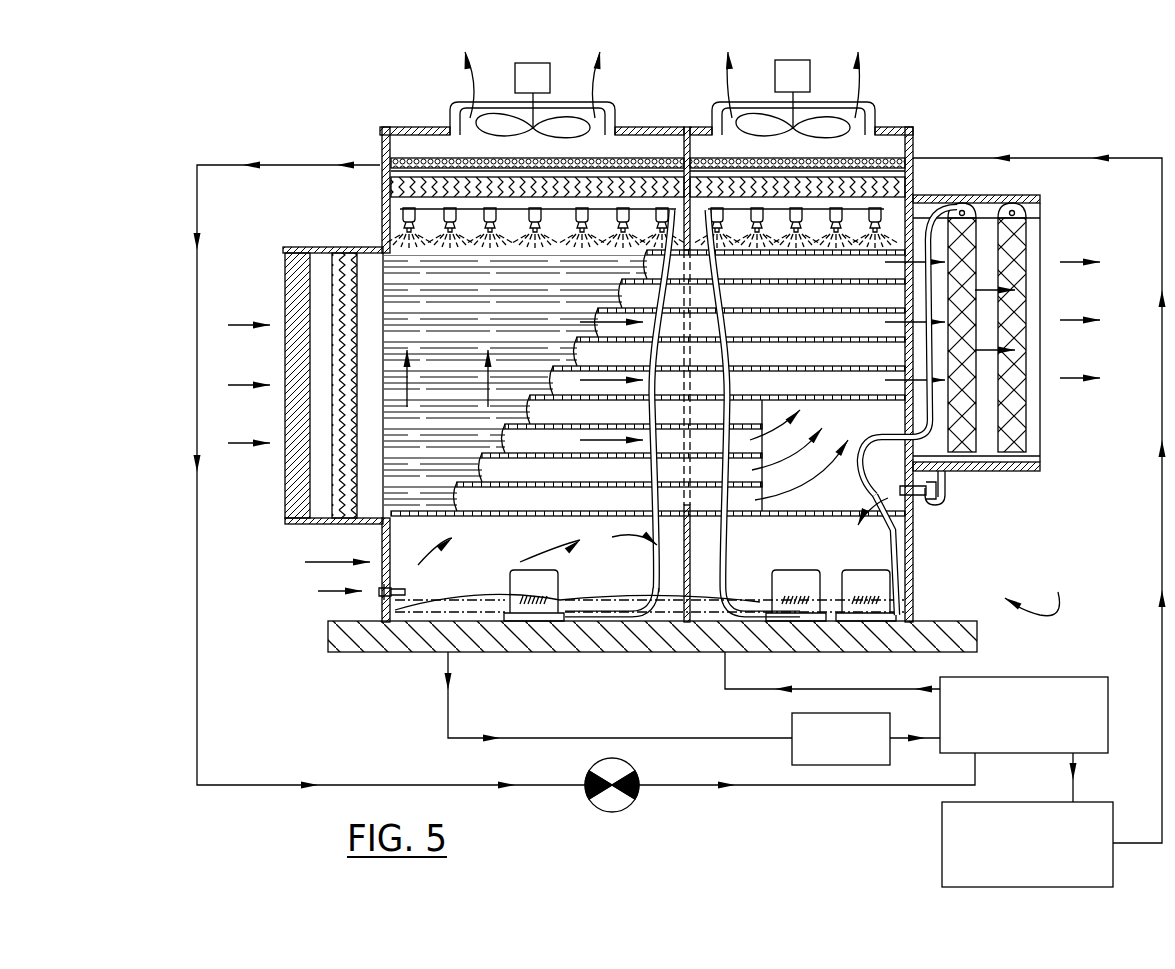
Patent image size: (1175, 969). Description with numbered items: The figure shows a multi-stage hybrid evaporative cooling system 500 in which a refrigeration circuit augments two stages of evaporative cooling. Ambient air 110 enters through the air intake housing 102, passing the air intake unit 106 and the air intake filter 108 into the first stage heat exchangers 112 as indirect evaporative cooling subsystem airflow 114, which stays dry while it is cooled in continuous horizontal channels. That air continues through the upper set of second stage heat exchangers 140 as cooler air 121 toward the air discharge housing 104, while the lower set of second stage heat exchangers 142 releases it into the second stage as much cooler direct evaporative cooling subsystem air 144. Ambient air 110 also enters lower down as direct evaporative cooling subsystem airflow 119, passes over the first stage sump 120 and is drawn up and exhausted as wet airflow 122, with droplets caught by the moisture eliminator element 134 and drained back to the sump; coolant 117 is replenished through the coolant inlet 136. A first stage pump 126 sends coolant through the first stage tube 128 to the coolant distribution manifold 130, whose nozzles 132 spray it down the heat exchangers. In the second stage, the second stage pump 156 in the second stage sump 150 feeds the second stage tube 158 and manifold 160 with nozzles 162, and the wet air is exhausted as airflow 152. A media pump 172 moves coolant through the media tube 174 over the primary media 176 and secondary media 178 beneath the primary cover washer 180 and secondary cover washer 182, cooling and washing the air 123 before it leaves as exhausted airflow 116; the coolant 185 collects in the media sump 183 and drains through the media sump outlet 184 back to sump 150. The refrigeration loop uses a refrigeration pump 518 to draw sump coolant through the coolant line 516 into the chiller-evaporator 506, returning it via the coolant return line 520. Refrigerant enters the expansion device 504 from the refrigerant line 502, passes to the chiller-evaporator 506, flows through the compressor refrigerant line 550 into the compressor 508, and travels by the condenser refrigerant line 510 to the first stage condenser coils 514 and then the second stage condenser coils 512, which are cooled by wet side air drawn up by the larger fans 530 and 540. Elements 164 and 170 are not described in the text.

The air intake housing 102 is at (318, 235).
The air discharge housing 104 is at (1050, 222).
The air intake unit 106 is at (285, 482).
The air intake filter 108 is at (344, 500).
The ambient air 110 is at (310, 562).
The first stage heat exchangers 112 is at (455, 322).
The indirect evaporative cooling subsystem airflow 114 is at (615, 437).
The exhausted airflow 116 is at (1060, 378).
The coolant 117 is at (312, 592).
The direct evaporative cooling subsystem airflow 119 is at (538, 541).
The first stage sump 120 is at (450, 598).
The cooler air 121 is at (900, 380).
The exhausted wet airflow 122 is at (535, 84).
The air entering discharge housing 123 is at (994, 350).
The first stage pump 126 is at (552, 582).
The first stage tube 128 is at (665, 580).
The first stage coolant distribution manifold 130 is at (424, 209).
The nozzles 132 is at (406, 215).
The first stage moisture eliminator element 134 is at (398, 185).
The coolant inlet 136 is at (402, 592).
The upper set of second stage heat exchangers 140 is at (768, 290).
The lower set of second stage heat exchangers 142 is at (745, 505).
The second stage direct evaporative cooling subsystem air 144 is at (800, 455).
The second stage sump 150 is at (715, 600).
The second stage exhausted airflow 152 is at (794, 84).
The second stage pump 156 is at (790, 575).
The second stage tube 158 is at (728, 580).
The second stage coolant distribution manifold 160 is at (818, 205).
The nozzles 162 is at (912, 135).
The spray nozzle 164 is at (875, 212).
The base 170 is at (345, 655).
The media pump 172 is at (840, 572).
The media tube 174 is at (870, 445).
The primary media 176 is at (965, 425).
The secondary media 178 is at (1020, 420).
The primary cover washer 180 is at (961, 209).
The secondary cover washer 182 is at (1013, 209).
The media sump 183 is at (950, 480).
The media sump outlet 184 is at (940, 505).
The coolant 185 is at (872, 497).
The multi-stage hybrid evaporative cooling system 500 is at (1040, 592).
The refrigerant line 502 is at (199, 715).
The expansion device 504 is at (614, 810).
The chiller-evaporator 506 is at (1024, 715).
The compressor 508 is at (1027, 844).
The condenser refrigerant line 510 is at (1160, 540).
The second stage condenser coils 512 is at (764, 160).
The first stage condenser coils 514 is at (498, 160).
The coolant line 516 is at (448, 725).
The refrigeration pump 518 is at (866, 739).
The coolant return line 520 is at (725, 682).
The first stage direct evaporative cooling subsystem fan 530 is at (536, 63).
The second stage direct evaporative cooling subsystem fan 540 is at (796, 60).
The compressor refrigerant line 550 is at (1075, 790).